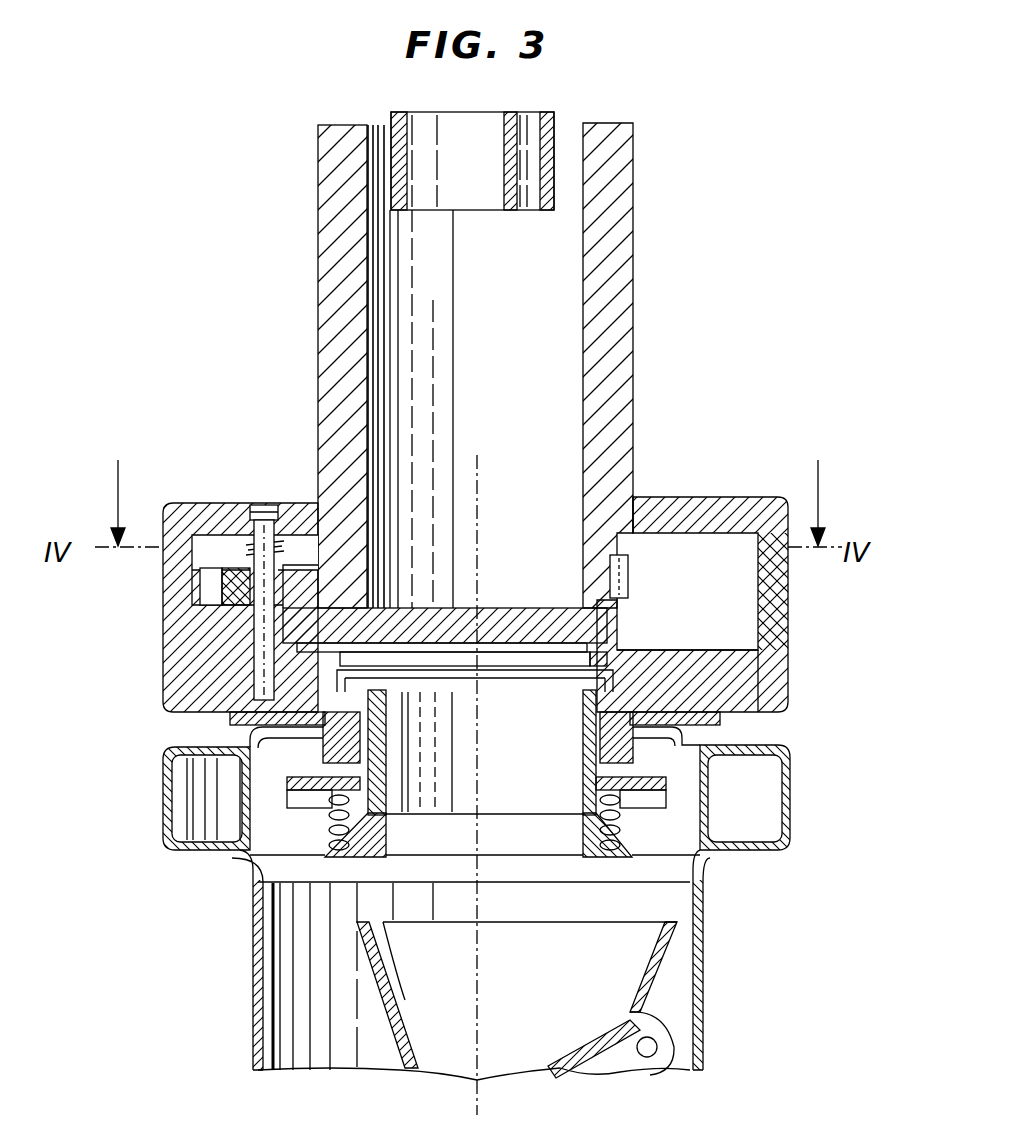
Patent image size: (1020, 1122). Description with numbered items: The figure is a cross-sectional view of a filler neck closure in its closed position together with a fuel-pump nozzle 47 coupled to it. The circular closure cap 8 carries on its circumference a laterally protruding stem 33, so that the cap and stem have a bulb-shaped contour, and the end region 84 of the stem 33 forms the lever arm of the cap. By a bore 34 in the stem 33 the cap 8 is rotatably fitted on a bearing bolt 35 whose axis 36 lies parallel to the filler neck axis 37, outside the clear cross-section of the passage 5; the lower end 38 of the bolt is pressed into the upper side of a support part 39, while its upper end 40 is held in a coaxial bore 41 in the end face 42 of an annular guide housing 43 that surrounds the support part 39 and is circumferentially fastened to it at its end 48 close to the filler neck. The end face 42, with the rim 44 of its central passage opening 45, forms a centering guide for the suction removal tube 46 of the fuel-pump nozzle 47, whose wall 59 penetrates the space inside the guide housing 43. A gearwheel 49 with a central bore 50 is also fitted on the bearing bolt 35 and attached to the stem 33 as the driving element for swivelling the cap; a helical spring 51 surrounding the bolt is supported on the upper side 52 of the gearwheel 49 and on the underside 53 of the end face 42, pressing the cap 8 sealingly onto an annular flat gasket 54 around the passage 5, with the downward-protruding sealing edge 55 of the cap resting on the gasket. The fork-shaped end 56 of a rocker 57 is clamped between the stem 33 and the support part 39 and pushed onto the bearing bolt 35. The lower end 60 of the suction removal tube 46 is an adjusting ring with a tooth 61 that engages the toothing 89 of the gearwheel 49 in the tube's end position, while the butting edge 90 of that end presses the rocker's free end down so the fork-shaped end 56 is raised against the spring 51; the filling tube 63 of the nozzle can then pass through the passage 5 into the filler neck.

The passage 5 is at (475, 901).
The closure cap 8 is at (548, 612).
The stem 33 is at (318, 520).
The bore 34 is at (205, 655).
The bearing bolt 35 is at (390, 600).
The axis 36 is at (262, 535).
The filler neck axis 37 is at (477, 472).
The lower end 38 is at (243, 730).
The support part 39 is at (378, 727).
The upper end 40 is at (228, 505).
The coaxial bore 41 is at (264, 508).
The end face 42 is at (180, 497).
The guide housing 43 is at (722, 497).
The rim 44 is at (622, 497).
The central passage opening 45 is at (385, 505).
The suction removal tube 46 is at (640, 358).
The fuel-pump nozzle 47 is at (724, 183).
The end 48 is at (770, 680).
The gearwheel 49 is at (233, 583).
The central bore 50 is at (230, 630).
The helical spring 51 is at (208, 503).
The upper side 52 is at (205, 588).
The underside 53 is at (195, 550).
The flat gasket 54 is at (613, 645).
The sealing edge 55 is at (407, 676).
The fork-shaped end 56 is at (233, 713).
The rocker 57 is at (400, 615).
The wall 59 is at (352, 238).
The lower end 60 is at (603, 568).
The tooth 61 is at (628, 572).
The filling tube 63 is at (397, 160).
The end region 84 is at (220, 692).
The toothing 89 is at (384, 560).
The butting edge 90 is at (613, 613).